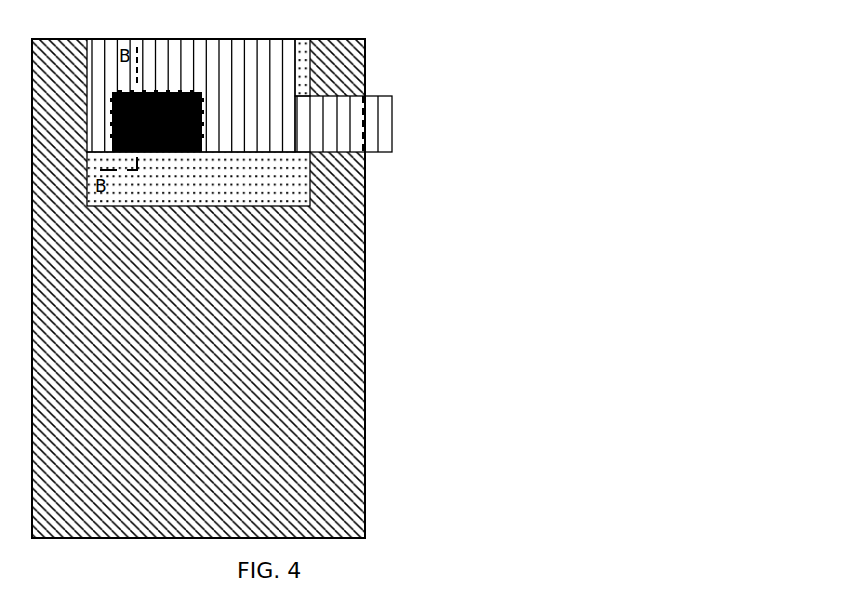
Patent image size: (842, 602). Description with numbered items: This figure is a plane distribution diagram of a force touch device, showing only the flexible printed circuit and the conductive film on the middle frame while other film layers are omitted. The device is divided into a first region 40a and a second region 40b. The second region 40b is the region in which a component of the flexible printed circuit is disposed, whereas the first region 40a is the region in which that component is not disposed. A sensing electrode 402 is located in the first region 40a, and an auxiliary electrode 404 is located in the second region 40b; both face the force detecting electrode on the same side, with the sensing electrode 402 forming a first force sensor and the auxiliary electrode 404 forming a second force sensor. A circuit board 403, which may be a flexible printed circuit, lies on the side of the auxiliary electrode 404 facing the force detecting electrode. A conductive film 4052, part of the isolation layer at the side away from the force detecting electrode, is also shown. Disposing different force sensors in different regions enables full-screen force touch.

The second region 40b is at (271, 76).
The auxiliary electrode 404 is at (288, 95).
The circuit board 403 is at (377, 123).
The conductive film 4052 is at (282, 180).
The first region 40a is at (365, 343).
The sensing electrode 402 is at (337, 428).